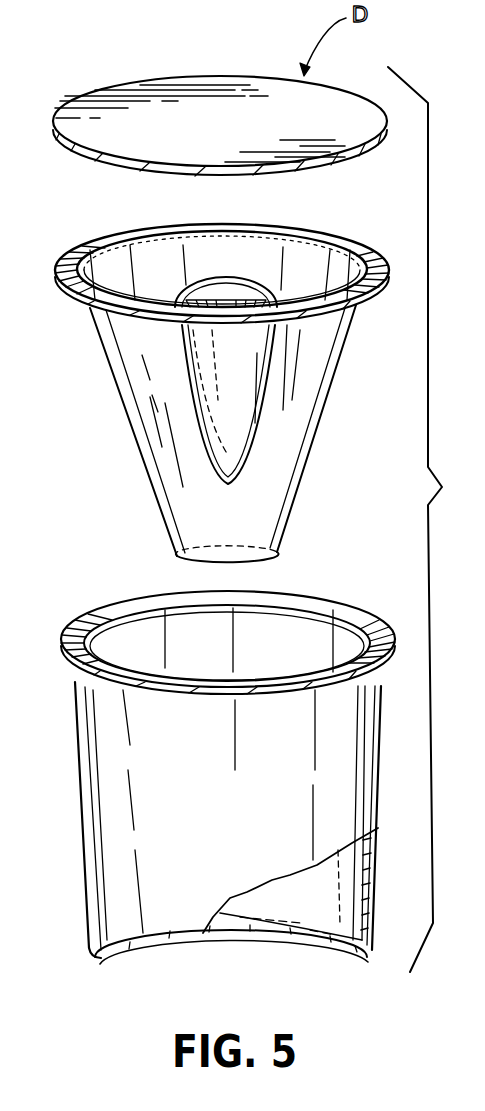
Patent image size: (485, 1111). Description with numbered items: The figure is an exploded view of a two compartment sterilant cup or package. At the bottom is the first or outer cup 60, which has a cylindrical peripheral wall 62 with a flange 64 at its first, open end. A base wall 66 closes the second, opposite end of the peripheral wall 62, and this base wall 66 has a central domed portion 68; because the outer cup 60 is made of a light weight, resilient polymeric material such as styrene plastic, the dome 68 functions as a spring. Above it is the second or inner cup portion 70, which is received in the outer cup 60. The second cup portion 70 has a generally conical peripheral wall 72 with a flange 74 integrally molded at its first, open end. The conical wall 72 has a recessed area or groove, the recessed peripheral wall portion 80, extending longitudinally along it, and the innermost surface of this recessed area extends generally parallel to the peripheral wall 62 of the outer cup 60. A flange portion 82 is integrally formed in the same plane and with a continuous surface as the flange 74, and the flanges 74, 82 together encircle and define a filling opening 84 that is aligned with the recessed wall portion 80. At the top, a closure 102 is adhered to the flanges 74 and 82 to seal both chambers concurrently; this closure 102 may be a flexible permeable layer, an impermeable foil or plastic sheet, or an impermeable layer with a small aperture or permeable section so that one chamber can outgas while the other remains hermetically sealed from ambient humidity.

The closure 102 is at (232, 140).
The flange 74 is at (374, 253).
The second cup portion 70 is at (224, 374).
The peripheral wall 72 is at (278, 487).
The recessed peripheral wall portion 80 is at (265, 370).
The flange portion 82 is at (257, 283).
The filling opening 84 is at (222, 301).
The flange 64 is at (381, 620).
The outer cup 60 is at (243, 775).
The peripheral wall 62 is at (374, 886).
The base wall 66 is at (243, 937).
The central domed portion 68 is at (277, 918).